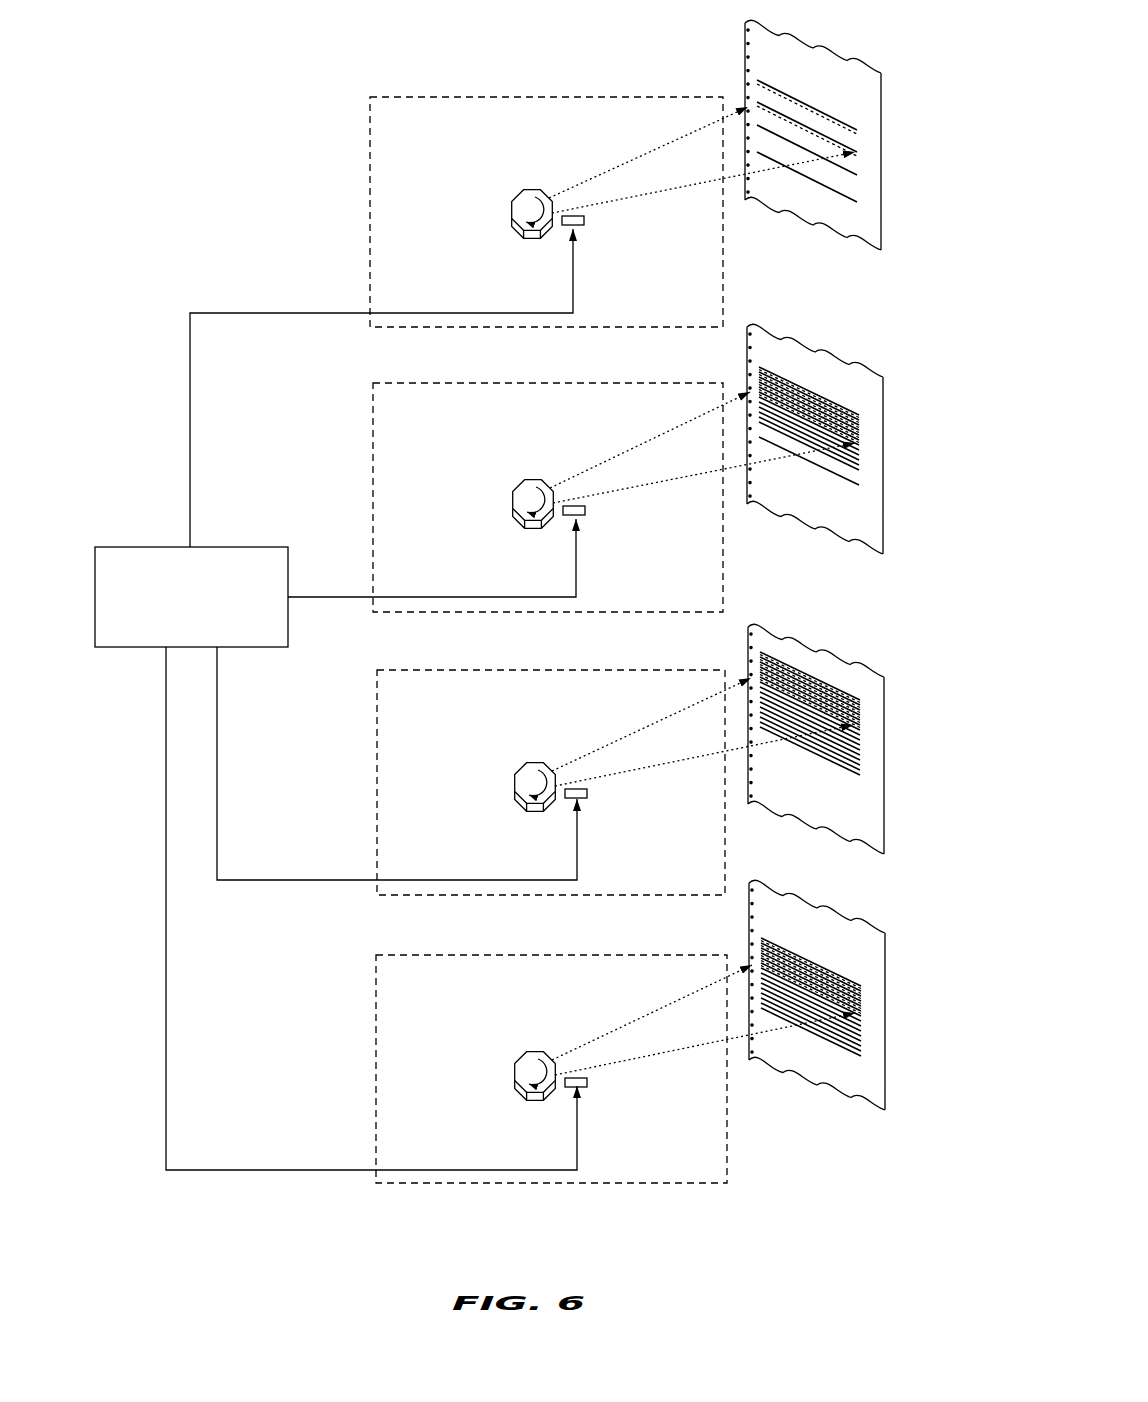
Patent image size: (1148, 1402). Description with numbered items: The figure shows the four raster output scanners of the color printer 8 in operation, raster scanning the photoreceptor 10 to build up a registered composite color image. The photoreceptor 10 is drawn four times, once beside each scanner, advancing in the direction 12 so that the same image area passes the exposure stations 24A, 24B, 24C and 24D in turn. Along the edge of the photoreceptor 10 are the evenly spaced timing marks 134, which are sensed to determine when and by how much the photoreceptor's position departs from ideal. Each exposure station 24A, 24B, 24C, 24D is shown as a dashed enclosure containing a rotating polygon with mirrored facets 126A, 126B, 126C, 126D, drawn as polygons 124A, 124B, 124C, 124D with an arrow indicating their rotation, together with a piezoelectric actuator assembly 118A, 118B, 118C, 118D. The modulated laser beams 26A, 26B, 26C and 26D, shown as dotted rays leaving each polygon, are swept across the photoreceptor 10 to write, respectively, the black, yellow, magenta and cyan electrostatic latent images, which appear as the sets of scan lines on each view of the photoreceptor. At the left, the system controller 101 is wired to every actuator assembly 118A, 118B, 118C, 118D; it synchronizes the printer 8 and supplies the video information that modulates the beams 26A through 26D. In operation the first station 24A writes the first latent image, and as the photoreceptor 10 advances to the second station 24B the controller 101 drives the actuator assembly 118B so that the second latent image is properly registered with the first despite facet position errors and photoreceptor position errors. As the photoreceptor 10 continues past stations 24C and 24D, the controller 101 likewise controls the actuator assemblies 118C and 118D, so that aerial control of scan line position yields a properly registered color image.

The printer 8 is at (485, 33).
The photoreceptor 10 is at (838, 565).
The direction 12 is at (911, 574).
The exposure station 24A is at (370, 97).
The exposure station 24B is at (373, 383).
The exposure station 24C is at (375, 669).
The exposure station 24D is at (376, 955).
The laser beam 26A is at (727, 178).
The laser beam 26B is at (755, 463).
The laser beam 26C is at (777, 737).
The laser beam 26D is at (762, 1027).
The system controller 101 is at (158, 648).
The piezoelectric actuator assembly 118A is at (585, 228).
The piezoelectric actuator assembly 118B is at (584, 516).
The piezoelectric actuator assembly 118C is at (586, 799).
The piezoelectric actuator assembly 118D is at (586, 1087).
The first rotating polygon mirror 124A is at (520, 206).
The second rotating polygon mirror 124B is at (521, 492).
The third rotating polygon mirror 124C is at (523, 776).
The fourth rotating polygon mirror 124D is at (523, 1064).
The mirrored facet 126A is at (525, 231).
The mirrored facet 126B is at (524, 522).
The mirrored facet 126C is at (526, 805).
The mirrored facet 126D is at (527, 1093).
The timing marks 134 is at (745, 58).